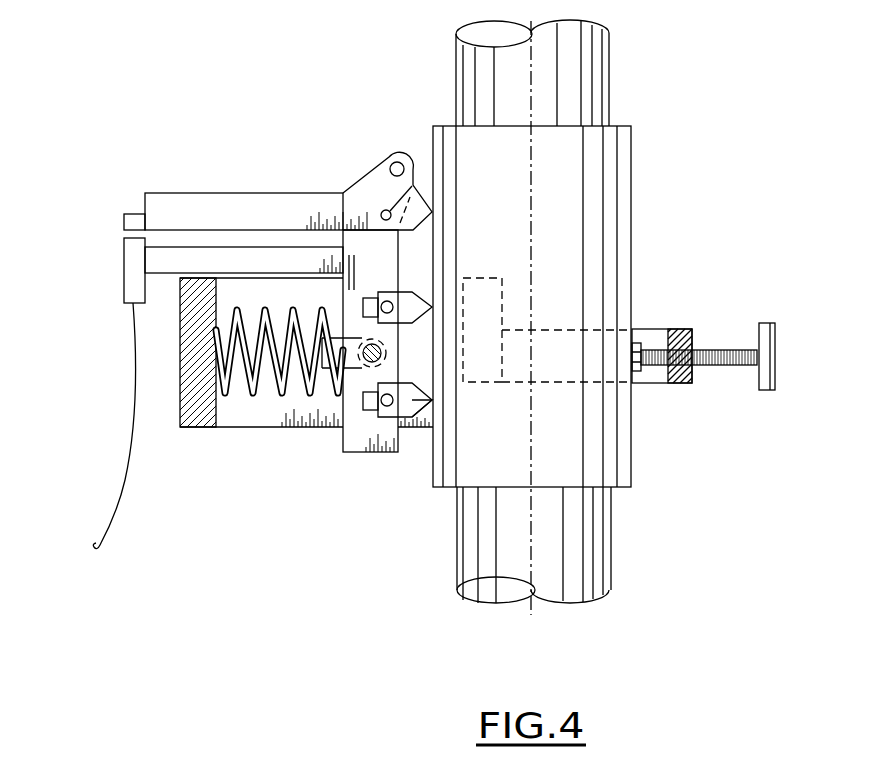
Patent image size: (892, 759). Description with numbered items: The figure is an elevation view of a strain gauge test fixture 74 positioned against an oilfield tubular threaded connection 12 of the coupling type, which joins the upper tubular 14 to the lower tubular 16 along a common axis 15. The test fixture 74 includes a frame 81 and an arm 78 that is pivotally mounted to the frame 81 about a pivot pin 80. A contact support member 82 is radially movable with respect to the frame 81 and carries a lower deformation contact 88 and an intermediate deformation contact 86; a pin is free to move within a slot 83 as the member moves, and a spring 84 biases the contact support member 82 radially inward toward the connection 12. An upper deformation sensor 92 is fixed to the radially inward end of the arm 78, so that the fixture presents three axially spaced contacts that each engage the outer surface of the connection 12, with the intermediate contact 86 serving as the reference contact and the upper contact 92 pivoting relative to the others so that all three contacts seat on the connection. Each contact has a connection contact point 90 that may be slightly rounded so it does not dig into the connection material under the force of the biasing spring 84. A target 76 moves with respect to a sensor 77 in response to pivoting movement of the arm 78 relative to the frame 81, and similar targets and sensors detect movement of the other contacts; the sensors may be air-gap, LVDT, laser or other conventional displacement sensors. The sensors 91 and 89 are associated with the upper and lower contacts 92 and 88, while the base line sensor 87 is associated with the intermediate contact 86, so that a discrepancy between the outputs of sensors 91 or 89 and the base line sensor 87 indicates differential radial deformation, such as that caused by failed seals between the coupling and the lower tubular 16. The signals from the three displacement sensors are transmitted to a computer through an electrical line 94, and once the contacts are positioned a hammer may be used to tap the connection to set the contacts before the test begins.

The connection 12 is at (610, 230).
The upper shaft 14 is at (588, 105).
The shaft axis 15 is at (532, 58).
The lower tubular 16 is at (590, 560).
The test fixture 74 is at (237, 177).
The target 76 is at (123, 217).
The sensor 77 is at (123, 263).
The arm 78 is at (185, 205).
The pivot pin 80 is at (392, 166).
The frame 81 is at (197, 352).
The contact support member 82 is at (382, 452).
The slot 83 is at (362, 373).
The spring 84 is at (258, 405).
The intermediate deformation contact 86 is at (428, 294).
The base line sensor 87 is at (389, 302).
The lower deformation contact 88 is at (402, 427).
The sensor 89 is at (398, 385).
The connection contact point 90 is at (420, 413).
The sensor 91 is at (413, 182).
The upper deformation sensor 92 is at (432, 204).
The electrical line 94 is at (127, 455).